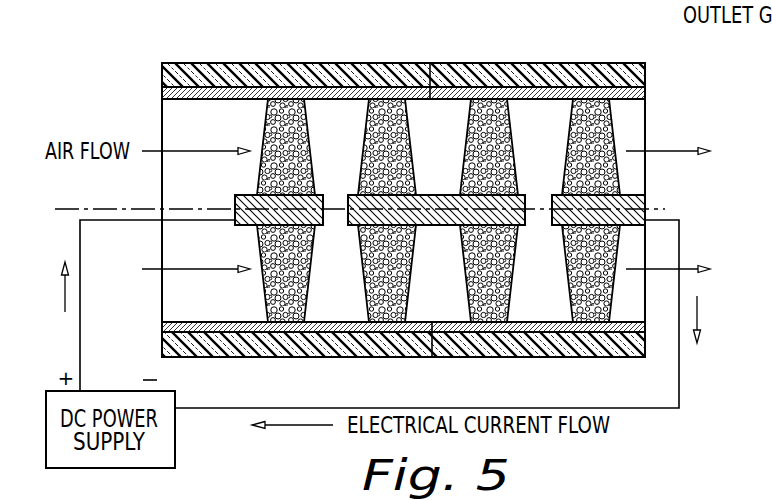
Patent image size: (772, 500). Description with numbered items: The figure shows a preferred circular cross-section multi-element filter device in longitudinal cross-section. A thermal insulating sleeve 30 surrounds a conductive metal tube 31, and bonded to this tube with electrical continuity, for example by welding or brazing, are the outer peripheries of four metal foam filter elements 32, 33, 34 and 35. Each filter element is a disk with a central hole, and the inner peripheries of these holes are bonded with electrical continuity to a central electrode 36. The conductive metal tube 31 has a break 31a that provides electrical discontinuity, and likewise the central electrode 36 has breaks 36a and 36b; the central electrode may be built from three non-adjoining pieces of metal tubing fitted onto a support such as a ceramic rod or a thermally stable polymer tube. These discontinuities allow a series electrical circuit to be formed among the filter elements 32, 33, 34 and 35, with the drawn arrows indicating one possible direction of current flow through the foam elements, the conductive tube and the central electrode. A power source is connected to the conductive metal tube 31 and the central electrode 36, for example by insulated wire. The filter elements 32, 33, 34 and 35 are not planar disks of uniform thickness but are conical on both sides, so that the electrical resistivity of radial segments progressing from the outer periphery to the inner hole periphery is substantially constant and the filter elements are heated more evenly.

The thermal insulating sleeve 30 is at (645, 74).
The conductive metal tube 31 is at (645, 93).
The break 31a is at (430, 63).
The metal foam filter element 32 is at (266, 99).
The metal foam filter element 33 is at (364, 99).
The metal foam filter element 34 is at (511, 99).
The metal foam filter element 35 is at (621, 99).
The central electrode 36 is at (645, 200).
The break 36a is at (334, 203).
The break 36b is at (538, 202).